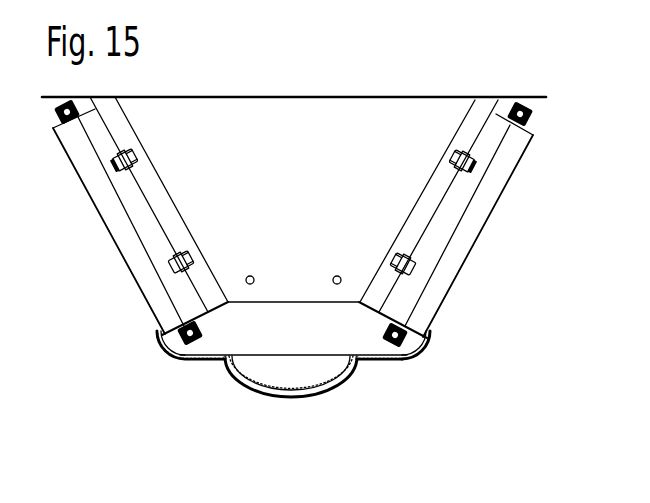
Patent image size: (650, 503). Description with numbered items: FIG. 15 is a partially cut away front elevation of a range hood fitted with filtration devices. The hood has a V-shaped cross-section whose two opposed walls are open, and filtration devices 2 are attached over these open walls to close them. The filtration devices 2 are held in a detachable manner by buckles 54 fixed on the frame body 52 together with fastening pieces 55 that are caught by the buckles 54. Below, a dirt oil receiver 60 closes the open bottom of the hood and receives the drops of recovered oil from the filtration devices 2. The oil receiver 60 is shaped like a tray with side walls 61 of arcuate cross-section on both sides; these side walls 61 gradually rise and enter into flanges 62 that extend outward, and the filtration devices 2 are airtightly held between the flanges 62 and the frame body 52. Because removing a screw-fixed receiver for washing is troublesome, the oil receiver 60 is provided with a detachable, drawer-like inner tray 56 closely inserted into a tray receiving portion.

The filtration device 2 is at (112, 233).
The frame body 52 is at (156, 188).
The buckle 54 is at (138, 157).
The fastening piece 55 is at (113, 163).
The inner tray 56 is at (290, 380).
The dirt oil receiver 60 is at (242, 386).
The side wall 61 is at (358, 364).
The flange 62 is at (426, 340).